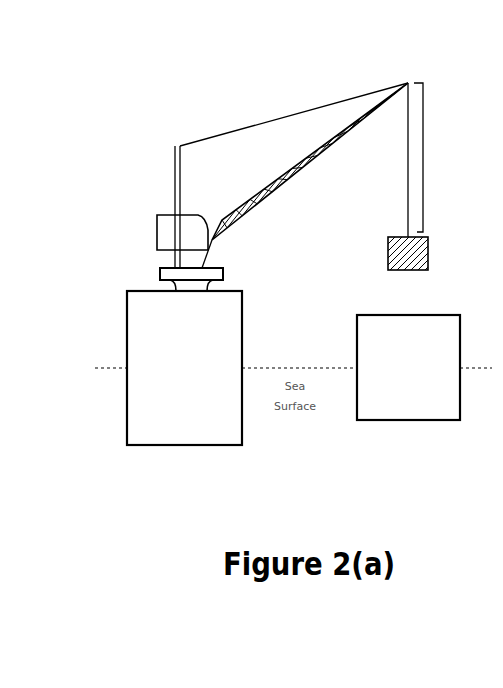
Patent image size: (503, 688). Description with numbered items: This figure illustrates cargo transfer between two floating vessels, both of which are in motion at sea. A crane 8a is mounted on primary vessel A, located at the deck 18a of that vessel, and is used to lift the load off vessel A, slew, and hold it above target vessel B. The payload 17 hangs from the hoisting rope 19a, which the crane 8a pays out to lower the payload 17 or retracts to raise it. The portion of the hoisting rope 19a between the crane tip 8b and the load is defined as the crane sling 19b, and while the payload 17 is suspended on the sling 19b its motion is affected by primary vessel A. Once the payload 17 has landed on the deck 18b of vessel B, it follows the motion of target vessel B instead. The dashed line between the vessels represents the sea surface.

The crane base / cab 8a is at (165, 228).
The crane boom tip 8b is at (412, 72).
The load 17 is at (428, 248).
The vessel A 18a is at (150, 291).
The vessel B 18b is at (413, 315).
The boom pendant line 19a is at (258, 122).
The hoist line / lowering distance 19b is at (424, 160).